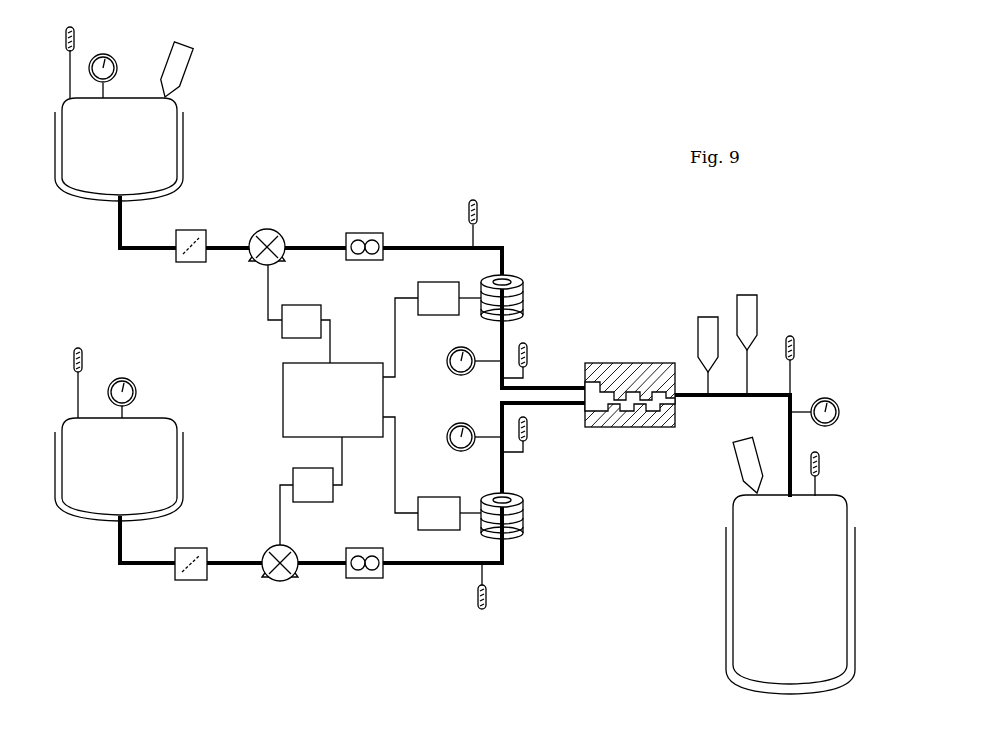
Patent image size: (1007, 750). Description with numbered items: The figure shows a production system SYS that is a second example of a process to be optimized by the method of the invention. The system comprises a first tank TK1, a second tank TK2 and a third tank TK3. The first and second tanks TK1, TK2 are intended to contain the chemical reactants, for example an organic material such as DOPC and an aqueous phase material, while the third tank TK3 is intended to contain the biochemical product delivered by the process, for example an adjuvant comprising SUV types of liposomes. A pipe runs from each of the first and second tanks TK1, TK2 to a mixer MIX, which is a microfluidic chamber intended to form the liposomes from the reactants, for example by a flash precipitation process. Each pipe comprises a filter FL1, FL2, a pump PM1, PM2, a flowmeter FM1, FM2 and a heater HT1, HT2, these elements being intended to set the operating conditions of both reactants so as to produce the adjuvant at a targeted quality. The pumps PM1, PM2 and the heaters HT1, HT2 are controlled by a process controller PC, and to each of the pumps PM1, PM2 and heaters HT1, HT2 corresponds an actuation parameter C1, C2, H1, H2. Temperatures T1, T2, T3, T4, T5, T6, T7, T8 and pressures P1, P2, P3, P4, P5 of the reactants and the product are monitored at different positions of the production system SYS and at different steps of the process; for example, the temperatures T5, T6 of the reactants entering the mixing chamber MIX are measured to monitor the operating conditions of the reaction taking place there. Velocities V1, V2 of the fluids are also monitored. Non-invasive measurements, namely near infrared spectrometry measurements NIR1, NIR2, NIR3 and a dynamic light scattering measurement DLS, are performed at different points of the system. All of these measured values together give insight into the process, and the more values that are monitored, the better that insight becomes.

The production system SYS is at (458, 117).
The first tank TK1 is at (119, 149).
The second tank TK2 is at (119, 469).
The third tank TK3 is at (790, 594).
The temperature T1 is at (84, 54).
The temperature T2 is at (93, 383).
The temperature T3 is at (487, 223).
The temperature T4 is at (496, 587).
The temperature T5 is at (531, 360).
The temperature T6 is at (531, 434).
The temperature T7 is at (803, 359).
The temperature T8 is at (829, 474).
The pressure P1 is at (115, 74).
The pressure P2 is at (135, 398).
The pressure P3 is at (458, 361).
The pressure P4 is at (458, 437).
The pressure P5 is at (815, 400).
The near infrared spectrometry measurement NIR1 is at (190, 60).
The near infrared spectrometry measurement NIR2 is at (744, 332).
The near infrared spectrometry measurement NIR3 is at (742, 455).
The dynamic light scattering measurement DLS is at (686, 345).
The filter FL1 is at (189, 263).
The filter FL2 is at (189, 581).
The pump PM1 is at (263, 229).
The pump PM2 is at (278, 585).
The velocity V1 is at (364, 234).
The velocity V2 is at (364, 552).
The flowmeter FM1 is at (356, 261).
The flowmeter FM2 is at (356, 579).
The actuation parameter C1 is at (301, 321).
The actuation parameter C2 is at (313, 485).
The process controller PC is at (333, 400).
The actuation parameter H1 is at (438, 298).
The actuation parameter H2 is at (439, 513).
The heater HT1 is at (521, 283).
The heater HT2 is at (521, 530).
The mixer MIX is at (645, 428).